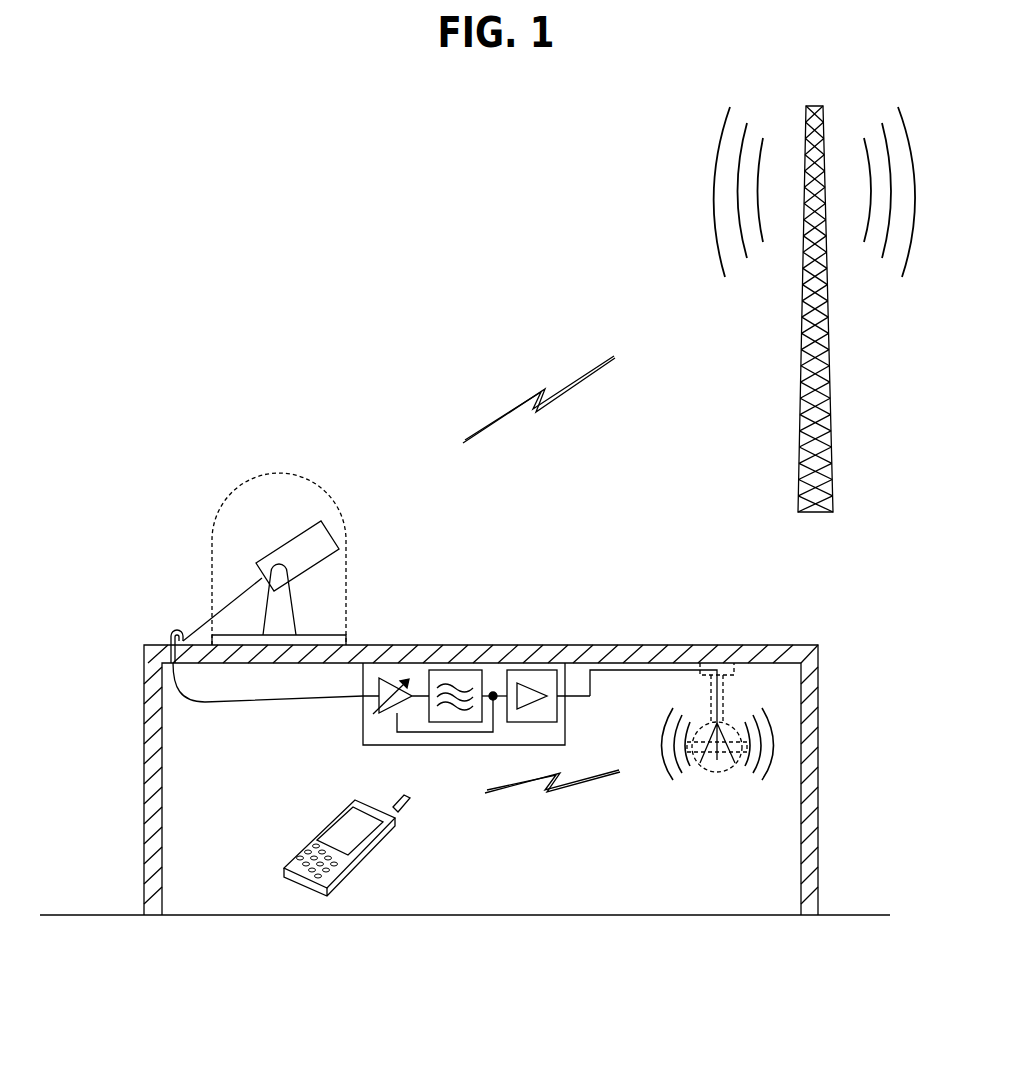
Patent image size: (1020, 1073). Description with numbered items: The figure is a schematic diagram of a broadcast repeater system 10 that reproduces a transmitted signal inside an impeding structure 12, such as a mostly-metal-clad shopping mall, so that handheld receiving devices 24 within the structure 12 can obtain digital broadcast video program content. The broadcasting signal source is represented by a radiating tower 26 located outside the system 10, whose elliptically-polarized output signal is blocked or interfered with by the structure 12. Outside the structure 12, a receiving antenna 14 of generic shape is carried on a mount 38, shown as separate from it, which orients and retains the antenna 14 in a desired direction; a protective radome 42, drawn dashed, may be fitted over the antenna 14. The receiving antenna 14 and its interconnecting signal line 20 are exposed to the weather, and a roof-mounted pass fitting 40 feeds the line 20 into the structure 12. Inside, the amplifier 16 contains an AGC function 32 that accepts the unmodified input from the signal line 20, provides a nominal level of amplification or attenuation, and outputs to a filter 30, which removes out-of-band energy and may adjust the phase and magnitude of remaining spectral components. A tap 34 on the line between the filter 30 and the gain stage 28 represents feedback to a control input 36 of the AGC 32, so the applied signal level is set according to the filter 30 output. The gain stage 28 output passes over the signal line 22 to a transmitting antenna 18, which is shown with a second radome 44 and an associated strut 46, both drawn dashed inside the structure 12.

The system 10 is at (401, 268).
The impeding structure 12 is at (717, 645).
The receiving antenna 14 is at (297, 540).
The amplifier 16 is at (363, 677).
The transmitting antenna 18 is at (715, 758).
The interconnecting signal line 20 is at (205, 625).
The interconnecting signal line 22 is at (578, 700).
The handheld receiving device 24 is at (312, 838).
The radiating tower 26 is at (800, 352).
The gain stage 28 is at (530, 670).
The filter 30 is at (455, 670).
The AGC function 32 is at (377, 702).
The tap 34 is at (493, 692).
The control input 36 is at (393, 725).
The mount 38 is at (293, 595).
The pass fitting 40 is at (172, 632).
The protective radome 42 is at (245, 485).
The second radome 44 is at (728, 770).
The strut 46 is at (711, 685).